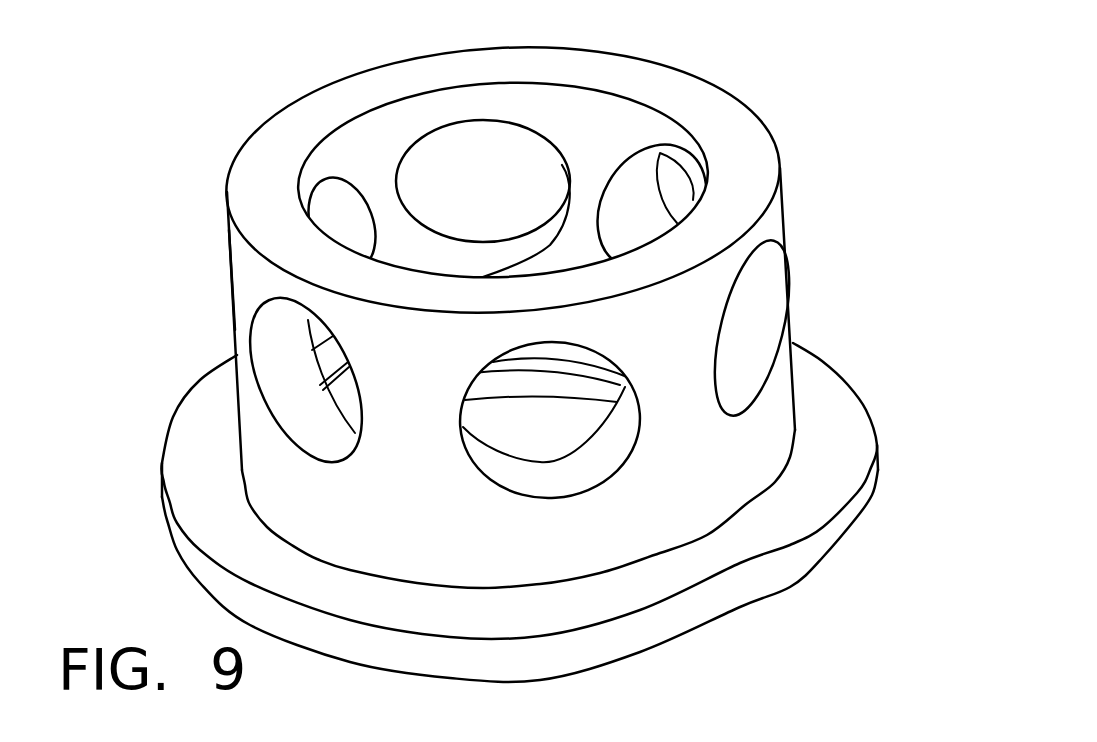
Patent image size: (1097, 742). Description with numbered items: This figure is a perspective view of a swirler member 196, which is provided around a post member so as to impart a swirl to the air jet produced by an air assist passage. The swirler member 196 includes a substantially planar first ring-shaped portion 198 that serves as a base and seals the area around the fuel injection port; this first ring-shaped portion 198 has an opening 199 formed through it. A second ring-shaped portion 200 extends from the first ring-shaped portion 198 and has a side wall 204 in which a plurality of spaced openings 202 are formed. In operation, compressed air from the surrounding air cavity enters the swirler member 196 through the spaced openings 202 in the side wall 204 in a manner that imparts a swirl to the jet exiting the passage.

The swirler member 196 is at (790, 68).
The first ring-shaped portion 198 is at (838, 393).
The opening 199 is at (500, 383).
The second ring-shaped portion 200 is at (800, 208).
The spaced openings 202 is at (532, 232).
The side wall 204 is at (247, 273).